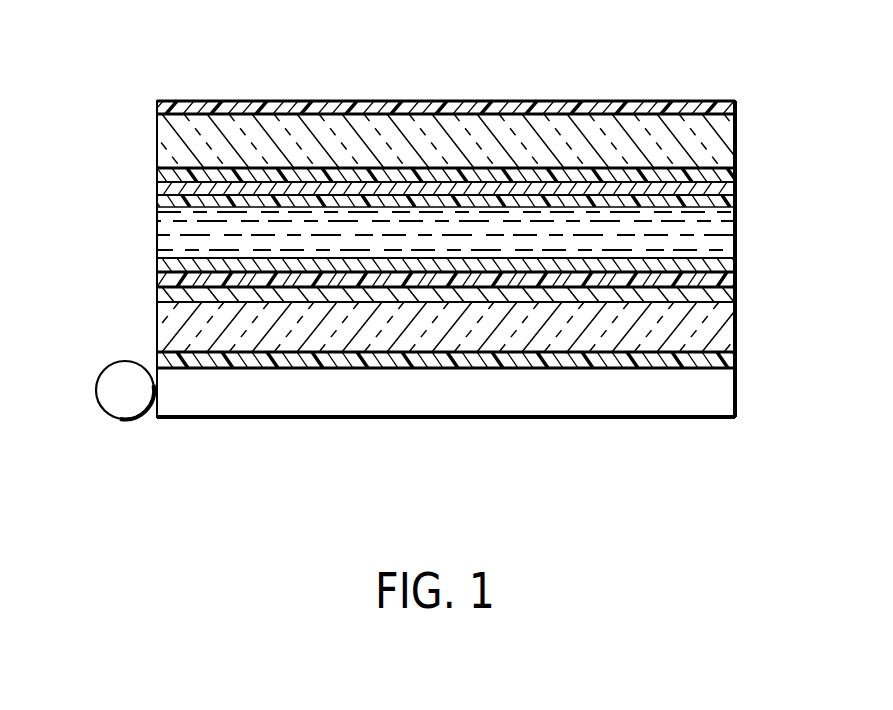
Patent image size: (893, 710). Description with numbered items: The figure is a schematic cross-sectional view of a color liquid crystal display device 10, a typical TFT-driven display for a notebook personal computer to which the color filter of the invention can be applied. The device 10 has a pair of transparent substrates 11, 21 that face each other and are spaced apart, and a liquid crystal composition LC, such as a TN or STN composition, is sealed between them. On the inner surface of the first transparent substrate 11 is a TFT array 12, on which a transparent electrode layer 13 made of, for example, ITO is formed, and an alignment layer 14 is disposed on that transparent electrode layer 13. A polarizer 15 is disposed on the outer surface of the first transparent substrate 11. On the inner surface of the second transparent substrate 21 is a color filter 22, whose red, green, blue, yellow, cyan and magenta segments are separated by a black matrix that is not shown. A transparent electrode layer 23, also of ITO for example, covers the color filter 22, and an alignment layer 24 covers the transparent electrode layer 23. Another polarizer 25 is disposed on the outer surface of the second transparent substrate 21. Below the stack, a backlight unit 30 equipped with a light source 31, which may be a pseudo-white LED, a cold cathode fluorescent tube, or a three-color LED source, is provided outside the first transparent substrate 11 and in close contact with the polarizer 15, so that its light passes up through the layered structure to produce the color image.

The color liquid crystal display device 10 is at (510, 82).
The first transparent substrate 11 is at (737, 334).
The TFT array 12 is at (737, 297).
The transparent electrode layer 13 is at (157, 280).
The alignment layer 14 is at (737, 268).
The polarizer 15 is at (737, 366).
The second transparent substrate 21 is at (157, 150).
The color filter 22 is at (737, 178).
The transparent electrode layer 23 is at (157, 192).
The alignment layer 24 is at (737, 205).
The polarizer 25 is at (737, 115).
The liquid crystal composition LC is at (157, 237).
The backlight unit 30 is at (487, 420).
The light source 31 is at (104, 397).